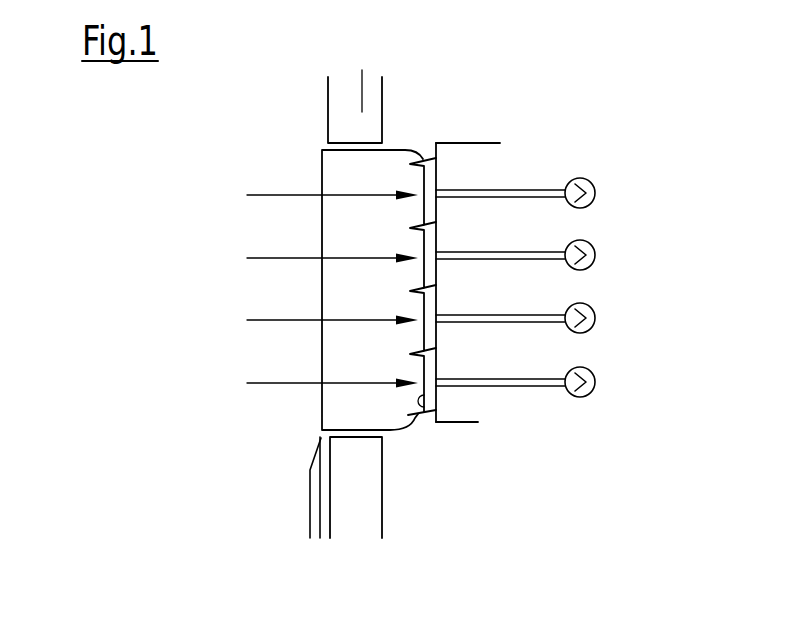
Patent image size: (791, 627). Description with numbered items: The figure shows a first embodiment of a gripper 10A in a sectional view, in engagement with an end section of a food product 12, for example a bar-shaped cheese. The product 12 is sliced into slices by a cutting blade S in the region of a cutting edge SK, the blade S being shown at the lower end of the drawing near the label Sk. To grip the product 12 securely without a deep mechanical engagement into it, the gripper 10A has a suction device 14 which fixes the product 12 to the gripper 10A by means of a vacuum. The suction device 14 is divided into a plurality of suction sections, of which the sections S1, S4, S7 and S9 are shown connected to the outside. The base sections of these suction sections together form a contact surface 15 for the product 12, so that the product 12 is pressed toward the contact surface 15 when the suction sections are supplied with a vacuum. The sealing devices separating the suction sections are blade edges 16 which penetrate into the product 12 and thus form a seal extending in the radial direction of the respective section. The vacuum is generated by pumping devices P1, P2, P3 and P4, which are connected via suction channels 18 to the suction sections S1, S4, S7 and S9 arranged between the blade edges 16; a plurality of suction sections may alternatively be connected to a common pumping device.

The food product 12 is at (322, 290).
The suction device 14 is at (430, 428).
The contact surface 15 is at (425, 412).
The blade edges 16 is at (420, 160).
The suction channels 18 is at (543, 253).
The gripper 10A is at (483, 130).
The cutting edge SK is at (356, 89).
The outlet channel Sk is at (372, 503).
The cutting blade S is at (308, 525).
The suction section S1 is at (314, 197).
The suction section S4 is at (313, 258).
The suction section S7 is at (313, 323).
The suction section S9 is at (313, 385).
The pumping device P1 is at (595, 188).
The pumping device P2 is at (595, 250).
The pumping device P3 is at (595, 313).
The pumping device P4 is at (595, 376).